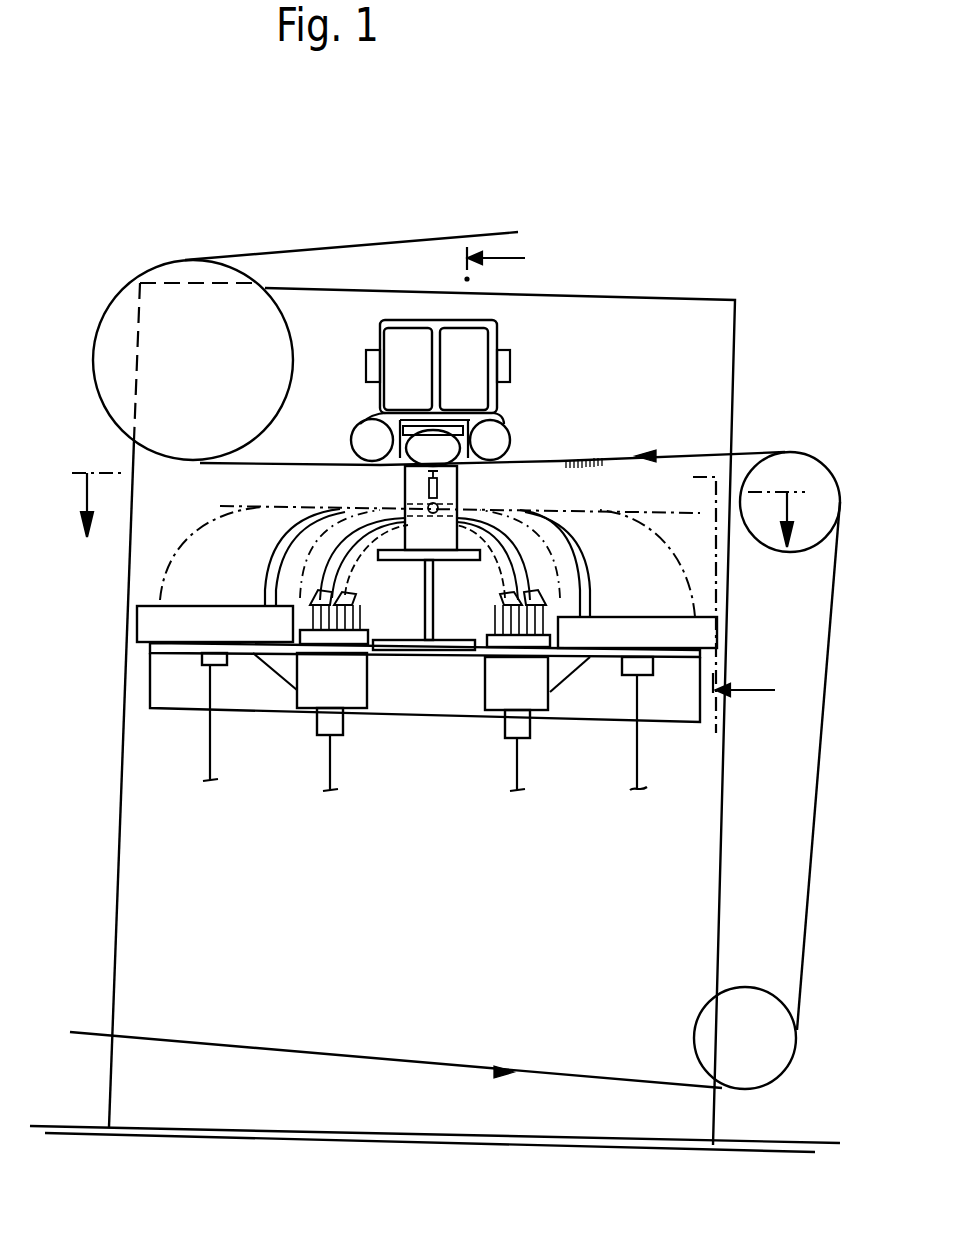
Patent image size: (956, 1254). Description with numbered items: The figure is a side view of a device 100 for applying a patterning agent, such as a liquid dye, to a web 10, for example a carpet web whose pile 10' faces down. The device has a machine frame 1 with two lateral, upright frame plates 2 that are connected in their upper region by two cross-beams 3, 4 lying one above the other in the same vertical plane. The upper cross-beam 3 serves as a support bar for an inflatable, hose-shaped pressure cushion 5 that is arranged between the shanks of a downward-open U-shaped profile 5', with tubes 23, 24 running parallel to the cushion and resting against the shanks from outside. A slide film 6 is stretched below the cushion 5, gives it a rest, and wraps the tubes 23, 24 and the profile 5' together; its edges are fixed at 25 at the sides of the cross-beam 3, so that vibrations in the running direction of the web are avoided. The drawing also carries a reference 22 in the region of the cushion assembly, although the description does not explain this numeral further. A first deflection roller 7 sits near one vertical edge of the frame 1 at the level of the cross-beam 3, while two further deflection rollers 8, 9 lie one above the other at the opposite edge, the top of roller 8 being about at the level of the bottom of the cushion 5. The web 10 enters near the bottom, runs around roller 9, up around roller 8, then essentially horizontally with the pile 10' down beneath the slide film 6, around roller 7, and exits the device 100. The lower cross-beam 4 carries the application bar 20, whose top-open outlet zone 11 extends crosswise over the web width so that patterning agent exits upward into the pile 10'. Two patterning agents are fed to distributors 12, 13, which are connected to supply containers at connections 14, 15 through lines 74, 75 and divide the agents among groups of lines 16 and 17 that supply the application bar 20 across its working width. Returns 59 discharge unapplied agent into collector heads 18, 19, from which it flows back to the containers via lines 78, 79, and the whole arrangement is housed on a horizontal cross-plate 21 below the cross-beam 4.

The device for applying a patterning agent 100 is at (713, 232).
The machine frame 1 is at (276, 1128).
The frame plate 2 is at (724, 797).
The upper cross-beam 3 is at (450, 320).
The cross-beam 4 is at (424, 606).
The pressure cushion 5 is at (436, 374).
The U-shaped profile 5' is at (406, 380).
The slide film 6 is at (505, 421).
The first deflection roller 7 is at (122, 318).
The deflection roller 8 is at (806, 546).
The deflection roller 9 is at (744, 1003).
The web 10 is at (455, 629).
The pile 10' is at (614, 486).
The outlet zone 11 is at (462, 472).
The distributor 12 is at (157, 622).
The distributor 13 is at (697, 635).
The connection 14 is at (201, 660).
The connection 15 is at (651, 678).
The group of lines 16 is at (282, 538).
The group of lines 17 is at (690, 583).
The collector head 18 is at (350, 690).
The collector head 19 is at (498, 690).
The application bar 20 is at (470, 500).
The cross-plate 21 is at (605, 658).
The carriage frame 22 is at (400, 413).
The tube 23 is at (366, 412).
The tube 24 is at (500, 410).
The slide film fixing point 25 is at (368, 354).
The return 59 is at (338, 599).
The line 74 is at (211, 762).
The line 75 is at (636, 770).
The line 78 is at (331, 765).
The line 79 is at (516, 770).